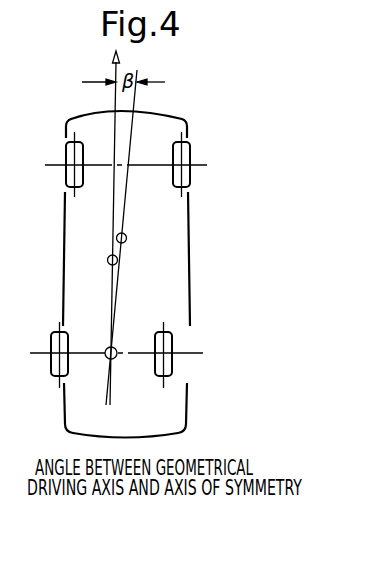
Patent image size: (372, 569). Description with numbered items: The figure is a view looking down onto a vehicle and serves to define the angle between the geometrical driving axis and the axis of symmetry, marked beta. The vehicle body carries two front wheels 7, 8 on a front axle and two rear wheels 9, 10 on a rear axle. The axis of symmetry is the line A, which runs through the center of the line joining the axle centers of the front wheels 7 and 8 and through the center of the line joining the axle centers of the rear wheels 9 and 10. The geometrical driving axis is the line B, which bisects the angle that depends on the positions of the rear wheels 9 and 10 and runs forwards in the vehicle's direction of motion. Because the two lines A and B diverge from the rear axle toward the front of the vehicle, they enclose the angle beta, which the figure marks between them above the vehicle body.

The front wheel 7 is at (67, 170).
The front wheel 8 is at (184, 158).
The rear wheel 9 is at (55, 358).
The rear wheel 10 is at (168, 343).
The axis of symmetry A is at (117, 236).
The geometrical driving axis B is at (109, 264).